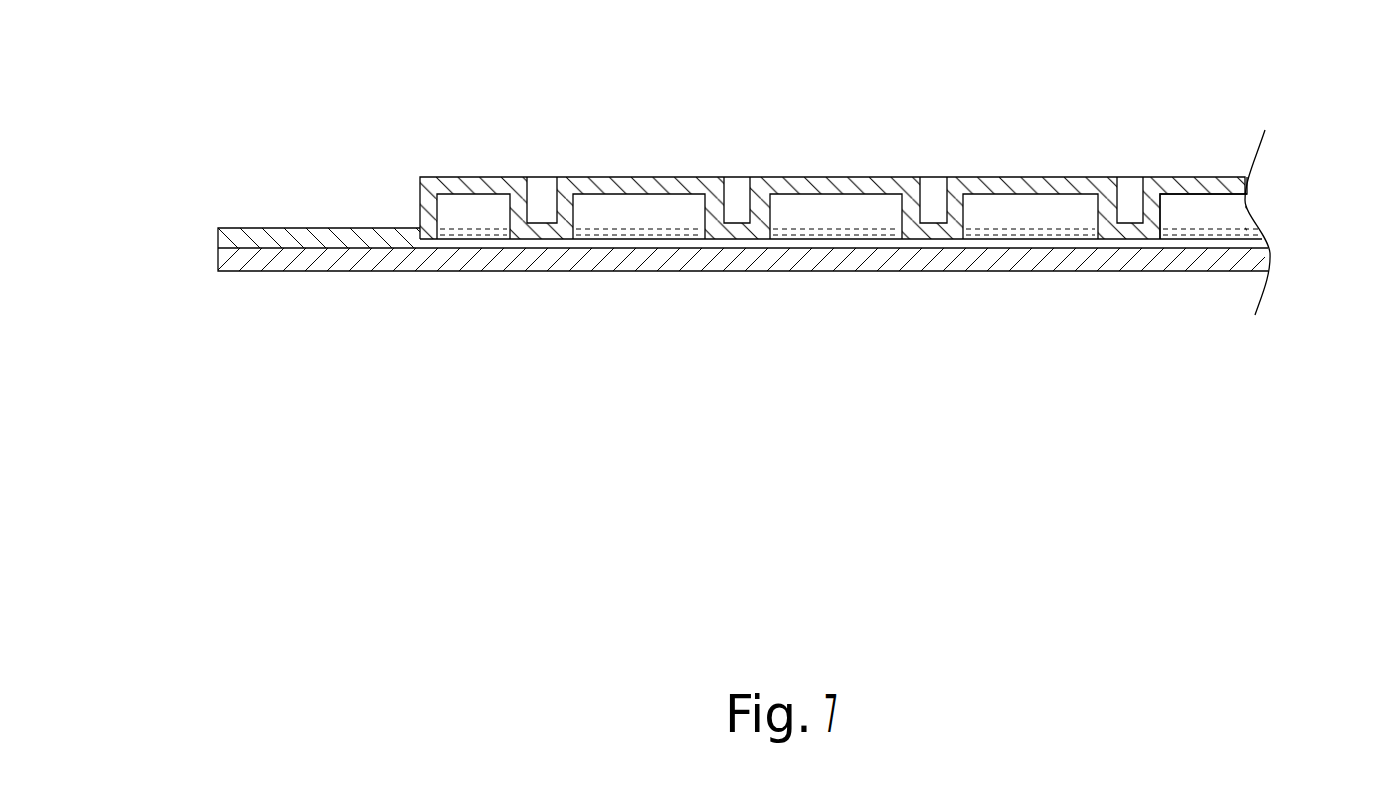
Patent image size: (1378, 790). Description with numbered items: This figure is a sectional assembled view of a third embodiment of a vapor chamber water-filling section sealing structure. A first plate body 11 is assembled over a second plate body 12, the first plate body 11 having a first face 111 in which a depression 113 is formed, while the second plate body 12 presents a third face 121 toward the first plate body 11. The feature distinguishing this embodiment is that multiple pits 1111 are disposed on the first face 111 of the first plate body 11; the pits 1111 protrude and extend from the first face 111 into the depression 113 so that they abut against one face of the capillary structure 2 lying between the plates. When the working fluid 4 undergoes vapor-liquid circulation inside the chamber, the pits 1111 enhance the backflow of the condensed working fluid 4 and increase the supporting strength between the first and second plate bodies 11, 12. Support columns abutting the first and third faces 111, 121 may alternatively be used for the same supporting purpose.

The second plate body 12 is at (220, 246).
The third face 121 is at (1262, 237).
The first plate body 11 is at (258, 230).
The first face 111 is at (1236, 208).
The depression 113 is at (692, 220).
The pits 1111 is at (540, 203).
The capillary structure 2 is at (437, 241).
The working fluid 4 is at (447, 232).